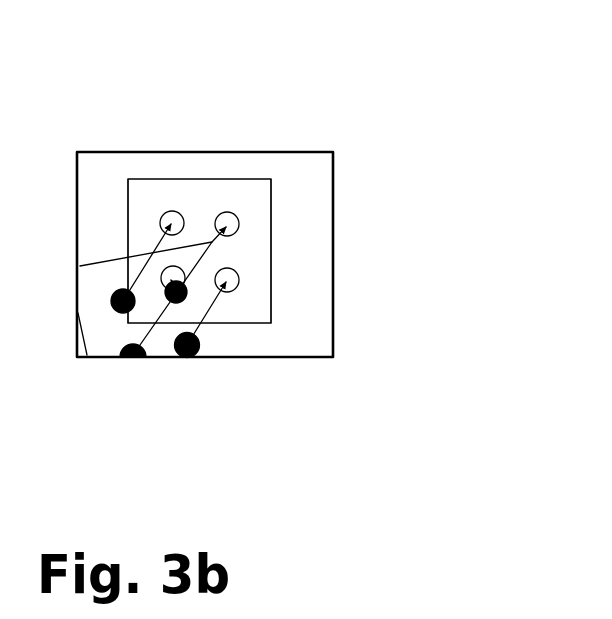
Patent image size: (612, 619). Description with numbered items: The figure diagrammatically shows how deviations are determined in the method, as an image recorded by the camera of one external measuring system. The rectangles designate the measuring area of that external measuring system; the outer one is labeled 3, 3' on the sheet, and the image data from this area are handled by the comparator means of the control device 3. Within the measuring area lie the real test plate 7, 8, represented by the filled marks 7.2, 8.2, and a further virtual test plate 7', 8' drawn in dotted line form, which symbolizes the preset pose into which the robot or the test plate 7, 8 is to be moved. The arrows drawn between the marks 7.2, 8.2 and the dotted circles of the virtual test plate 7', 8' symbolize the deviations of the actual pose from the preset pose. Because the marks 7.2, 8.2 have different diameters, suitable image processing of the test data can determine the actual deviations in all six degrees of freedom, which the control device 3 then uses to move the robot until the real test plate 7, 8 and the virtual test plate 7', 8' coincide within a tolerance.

The control device 3 is at (225, 184).
The second component / workpiece 3' is at (225, 184).
The test plate 7 is at (247, 309).
The test plate 8 is at (247, 309).
The virtual test plate 7' is at (284, 257).
The virtual test plate 8' is at (284, 257).
The marks 7.2 is at (151, 370).
The marks 8.2 is at (120, 312).